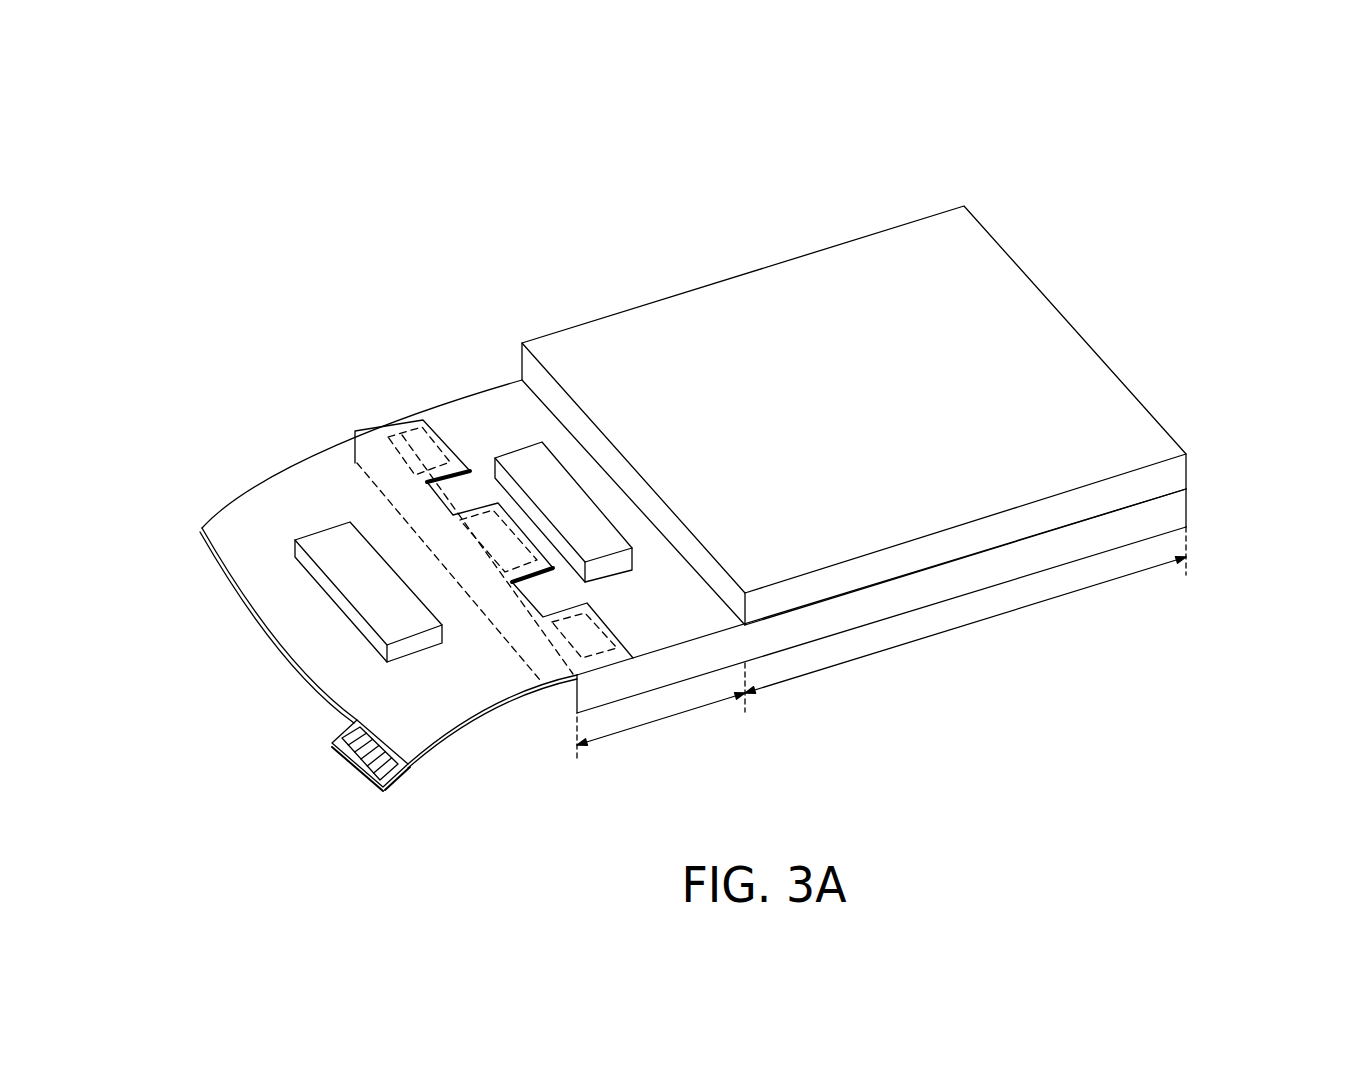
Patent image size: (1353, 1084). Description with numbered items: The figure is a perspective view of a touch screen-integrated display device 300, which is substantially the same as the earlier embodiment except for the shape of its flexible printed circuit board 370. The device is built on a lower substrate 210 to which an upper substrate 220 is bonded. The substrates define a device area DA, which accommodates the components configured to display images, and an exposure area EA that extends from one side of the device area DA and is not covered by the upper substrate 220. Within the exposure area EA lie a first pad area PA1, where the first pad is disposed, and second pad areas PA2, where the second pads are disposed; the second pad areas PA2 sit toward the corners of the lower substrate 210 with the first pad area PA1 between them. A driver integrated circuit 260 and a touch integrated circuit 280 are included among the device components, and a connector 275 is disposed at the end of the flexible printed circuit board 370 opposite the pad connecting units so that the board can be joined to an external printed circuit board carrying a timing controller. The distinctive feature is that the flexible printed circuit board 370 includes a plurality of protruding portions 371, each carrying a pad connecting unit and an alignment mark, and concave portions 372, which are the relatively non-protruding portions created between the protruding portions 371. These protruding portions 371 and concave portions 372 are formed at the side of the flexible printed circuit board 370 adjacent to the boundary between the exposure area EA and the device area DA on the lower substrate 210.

The touch screen-integrated display device 300 is at (1156, 132).
The upper substrate 220 is at (1167, 476).
The lower substrate 210 is at (1170, 514).
The driver integrated circuit 260 is at (563, 467).
The touch integrated circuit 280 is at (323, 530).
The connector 275 is at (354, 760).
The flexible printed circuit board 370 is at (206, 540).
The protruding portion 371 is at (395, 433).
The concave portion 372 is at (454, 476).
The first pad area PA1 is at (522, 540).
The second pad area PA2 is at (402, 431).
The exposure area EA is at (661, 711).
The device area DA is at (965, 610).